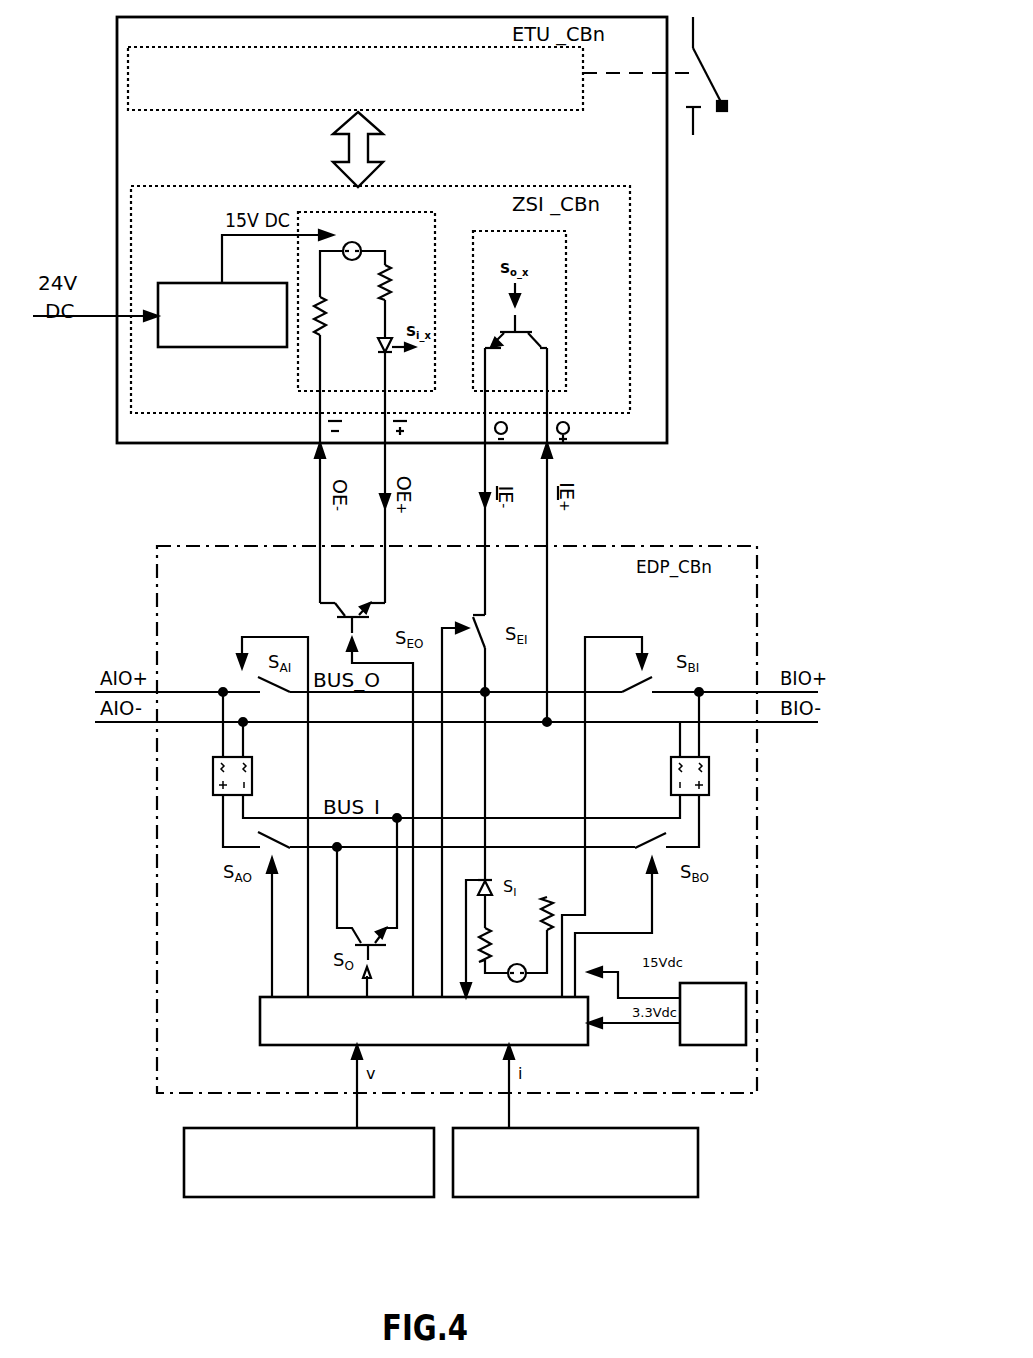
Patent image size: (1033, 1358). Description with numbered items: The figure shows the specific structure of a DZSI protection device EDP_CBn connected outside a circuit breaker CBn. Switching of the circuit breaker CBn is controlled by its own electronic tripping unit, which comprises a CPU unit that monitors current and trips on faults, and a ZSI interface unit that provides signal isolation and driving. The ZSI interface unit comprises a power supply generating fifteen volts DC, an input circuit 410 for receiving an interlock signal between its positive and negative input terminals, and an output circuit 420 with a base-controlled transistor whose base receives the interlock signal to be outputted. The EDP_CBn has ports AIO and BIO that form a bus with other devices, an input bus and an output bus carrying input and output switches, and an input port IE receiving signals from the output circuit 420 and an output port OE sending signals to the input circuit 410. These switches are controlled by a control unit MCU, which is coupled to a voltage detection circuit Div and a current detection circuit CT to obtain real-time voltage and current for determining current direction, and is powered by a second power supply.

The input circuit 410 is at (366, 407).
The output circuit 420 is at (520, 476).
The circuit breaker CBn is at (720, 76).
The control unit MCU is at (424, 1021).
The voltage detection circuit Div is at (309, 1162).
The current detection circuit CT is at (575, 1162).